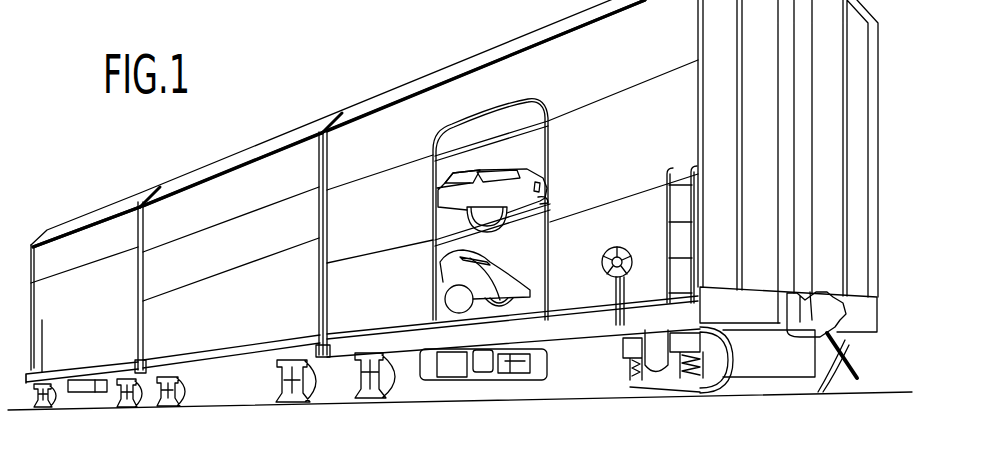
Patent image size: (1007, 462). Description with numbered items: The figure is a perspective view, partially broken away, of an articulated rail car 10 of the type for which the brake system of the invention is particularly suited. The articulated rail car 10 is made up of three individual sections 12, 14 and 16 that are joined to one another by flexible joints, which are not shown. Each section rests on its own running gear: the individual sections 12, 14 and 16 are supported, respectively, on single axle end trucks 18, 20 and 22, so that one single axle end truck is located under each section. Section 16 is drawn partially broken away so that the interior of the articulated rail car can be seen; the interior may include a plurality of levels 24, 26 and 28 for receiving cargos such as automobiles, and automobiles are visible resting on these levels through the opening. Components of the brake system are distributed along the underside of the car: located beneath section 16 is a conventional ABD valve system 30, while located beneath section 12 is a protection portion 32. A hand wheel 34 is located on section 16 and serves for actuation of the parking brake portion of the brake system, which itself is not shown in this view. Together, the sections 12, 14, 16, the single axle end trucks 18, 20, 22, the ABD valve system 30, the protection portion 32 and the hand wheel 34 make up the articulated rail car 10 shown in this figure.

The articulated rail car 10 is at (303, 71).
The individual section 12 is at (95, 213).
The individual section 14 is at (258, 150).
The individual section 16 is at (499, 48).
The single axle end truck 18 is at (45, 407).
The single axle end truck 20 is at (172, 400).
The single axle end truck 22 is at (370, 393).
The level 24 is at (530, 118).
The level 26 is at (453, 207).
The level 28 is at (448, 282).
The ABD valve system 30 is at (467, 382).
The protection portion 32 is at (88, 392).
The hand wheel 34 is at (602, 266).